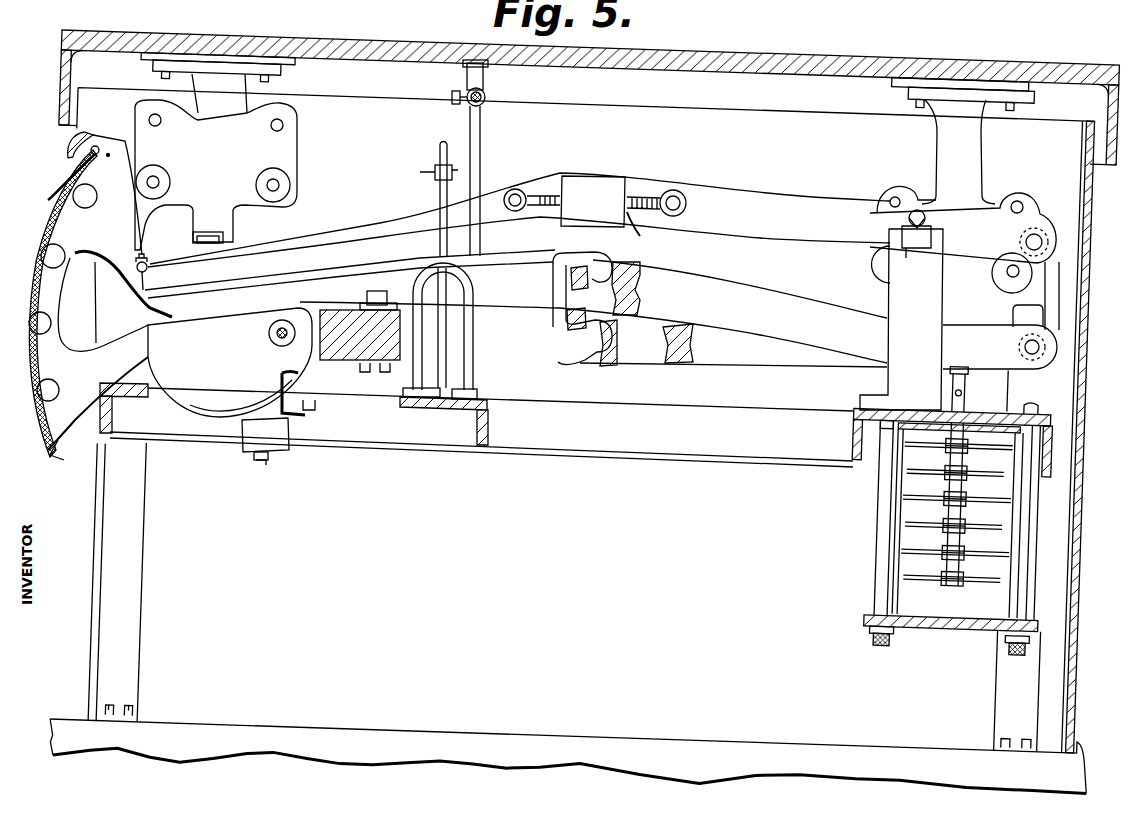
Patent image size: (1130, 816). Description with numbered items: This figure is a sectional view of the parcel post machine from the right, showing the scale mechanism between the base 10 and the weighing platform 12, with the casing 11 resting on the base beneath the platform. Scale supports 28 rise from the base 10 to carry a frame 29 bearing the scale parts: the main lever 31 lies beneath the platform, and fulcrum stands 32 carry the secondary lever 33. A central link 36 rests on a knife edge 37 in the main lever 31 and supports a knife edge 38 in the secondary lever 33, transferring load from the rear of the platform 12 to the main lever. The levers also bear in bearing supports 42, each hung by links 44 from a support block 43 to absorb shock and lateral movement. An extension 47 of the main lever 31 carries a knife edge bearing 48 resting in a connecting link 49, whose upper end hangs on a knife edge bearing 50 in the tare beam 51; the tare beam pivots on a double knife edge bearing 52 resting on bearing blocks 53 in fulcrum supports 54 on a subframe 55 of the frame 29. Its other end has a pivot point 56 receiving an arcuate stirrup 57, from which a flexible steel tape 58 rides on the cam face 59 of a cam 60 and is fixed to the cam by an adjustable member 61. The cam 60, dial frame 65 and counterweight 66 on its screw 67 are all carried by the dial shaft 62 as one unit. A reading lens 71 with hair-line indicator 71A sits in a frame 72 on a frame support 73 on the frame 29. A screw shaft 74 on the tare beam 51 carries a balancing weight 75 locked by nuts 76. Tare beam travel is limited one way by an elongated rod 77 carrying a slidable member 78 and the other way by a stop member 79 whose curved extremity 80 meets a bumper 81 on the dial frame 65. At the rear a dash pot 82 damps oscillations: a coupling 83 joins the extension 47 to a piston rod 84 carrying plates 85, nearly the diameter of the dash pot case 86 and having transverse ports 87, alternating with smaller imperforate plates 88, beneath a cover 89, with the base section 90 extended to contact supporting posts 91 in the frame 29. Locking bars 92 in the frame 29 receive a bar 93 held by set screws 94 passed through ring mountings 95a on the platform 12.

The base 10 is at (222, 708).
The casing 11 is at (1067, 700).
The weighing platform 12 is at (62, 55).
The scale supports 28 is at (137, 577).
The frame 29 is at (590, 445).
The main lever 31 is at (503, 305).
The fulcrum stands 32 is at (1016, 386).
The secondary lever 33 is at (742, 352).
The link 36 is at (572, 258).
The knife edge 37 is at (618, 250).
The knife edge 38 is at (566, 342).
The bearing supports 42 is at (233, 212).
The support block 43 is at (283, 62).
The links 44 is at (128, 128).
The extension 47 is at (948, 345).
The knife edge bearing 48 is at (1024, 347).
The connecting link 49 is at (1074, 236).
The knife edge bearing 50 is at (1036, 238).
The tare beam 51 is at (808, 183).
The double knife edge bearing 52 is at (909, 218).
The bearing blocks 53 is at (903, 250).
The fulcrum supports 54 is at (892, 310).
The subframe 55 is at (1046, 415).
The pivot point 56 is at (149, 270).
The arcuate stirrup 57 is at (136, 265).
The flexible steel tape 58 is at (143, 316).
The cam face 59 is at (188, 402).
The cam 60 is at (233, 407).
The adjustable member 61 is at (306, 417).
The dial shaft 62 is at (272, 336).
The dial frame 65 is at (56, 452).
The counterweight 66 is at (288, 452).
The screw 67 is at (256, 465).
The reading lens 71 is at (68, 146).
The frame 72 is at (88, 155).
The hair-line indicator 71A is at (92, 158).
The frame support 73 is at (100, 304).
The screw shaft 74 is at (648, 198).
The weight 75 is at (612, 186).
The nuts 76 is at (631, 222).
The elongated rod 77 is at (440, 152).
The member 78 is at (436, 176).
The stop member 79 is at (474, 294).
The curved extremity 80 is at (378, 291).
The bumper 81 is at (352, 283).
The dash pot 82 is at (890, 599).
The coupling 83 is at (960, 372).
The piston rod 84 is at (956, 404).
The plates 85 is at (996, 448).
The dash pot case 86 is at (864, 507).
The transverse ports 87 is at (952, 448).
The imperforate plates 88 is at (936, 474).
The cover 89 is at (893, 425).
The base section 90 is at (952, 624).
The supporting posts 91 is at (885, 545).
The bars 92 is at (479, 156).
The bar 93 is at (485, 97).
The set screw 94 is at (453, 95).
The ring mounting 95a is at (484, 83).